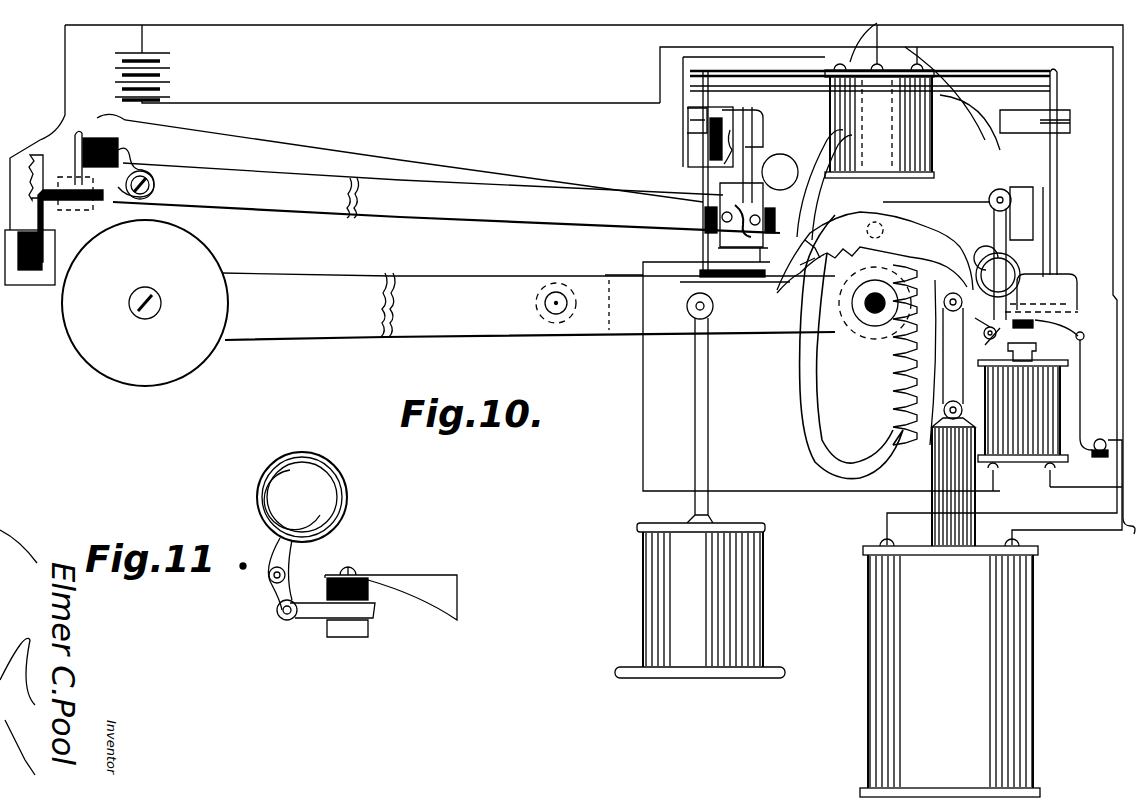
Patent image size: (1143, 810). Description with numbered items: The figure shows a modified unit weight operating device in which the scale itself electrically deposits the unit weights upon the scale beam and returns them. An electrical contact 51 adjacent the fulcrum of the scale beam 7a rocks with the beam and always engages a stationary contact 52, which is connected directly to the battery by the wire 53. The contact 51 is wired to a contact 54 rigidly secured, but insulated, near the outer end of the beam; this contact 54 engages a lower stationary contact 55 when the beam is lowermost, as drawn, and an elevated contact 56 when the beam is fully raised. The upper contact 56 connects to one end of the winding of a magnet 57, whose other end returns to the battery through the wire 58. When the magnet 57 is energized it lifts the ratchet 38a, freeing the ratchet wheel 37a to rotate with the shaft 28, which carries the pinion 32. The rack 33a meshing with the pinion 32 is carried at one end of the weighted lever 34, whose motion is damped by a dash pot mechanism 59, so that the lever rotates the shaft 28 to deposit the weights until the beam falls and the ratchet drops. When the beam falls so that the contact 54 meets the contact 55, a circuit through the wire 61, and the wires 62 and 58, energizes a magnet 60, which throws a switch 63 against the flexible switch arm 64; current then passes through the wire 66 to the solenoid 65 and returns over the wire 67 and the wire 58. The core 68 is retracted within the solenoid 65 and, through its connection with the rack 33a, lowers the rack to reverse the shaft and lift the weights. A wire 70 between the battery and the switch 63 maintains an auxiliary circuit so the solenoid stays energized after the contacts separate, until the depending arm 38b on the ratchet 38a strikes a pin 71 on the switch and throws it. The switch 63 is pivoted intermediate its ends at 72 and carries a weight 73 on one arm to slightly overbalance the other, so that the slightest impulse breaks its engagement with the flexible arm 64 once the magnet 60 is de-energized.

In FIG. 10, the wire 70 is at (481, 25).
In FIG. 10, the electrical contact 51 is at (90, 118).
In FIG. 10, the stationary contact 52 is at (40, 230).
In FIG. 10, the wire 53 is at (28, 285).
In FIG. 10, the scale beam 7a is at (323, 203).
In FIG. 10, the weighted lever 34 is at (445, 328).
In FIG. 10, the elevated contact 56 is at (692, 178).
In FIG. 10, the contact 54 is at (710, 233).
In FIG. 10, the stationary contact 55 is at (718, 258).
In FIG. 10, the magnet 57 is at (828, 105).
In FIG. 10, the wire 58 is at (898, 35).
In FIG. 10, the ratchet 38a is at (1000, 183).
In FIG. 10, the depending arm 38b is at (1017, 237).
In FIG. 10, the ratchet wheel 37a is at (854, 264).
In FIG. 10, the shaft 28 is at (873, 313).
In FIG. 10, the pinion 32 is at (903, 327).
In FIG. 10, the rack 33a is at (898, 407).
In FIG. 10, the pin 71 is at (984, 337).
In FIG. 11, the pin 71 is at (272, 581).
In FIG. 10, the pivot 72 is at (1006, 364).
In FIG. 11, the pivot 72 is at (288, 620).
In FIG. 10, the switch 63 is at (1056, 320).
In FIG. 11, the switch 63 is at (400, 576).
In FIG. 10, the wire 62 is at (1067, 438).
In FIG. 10, the flexible switch arm 64 is at (1087, 396).
In FIG. 10, the magnet 60 is at (1022, 462).
In FIG. 10, the core 68 is at (940, 475).
In FIG. 10, the wire 61 is at (848, 486).
In FIG. 10, the dash pot mechanism 59 is at (648, 556).
In FIG. 10, the return wire 67 is at (1018, 511).
In FIG. 10, the wire 66 is at (1124, 549).
In FIG. 10, the solenoid 65 is at (1025, 594).
In FIG. 11, the weight 73 is at (277, 473).